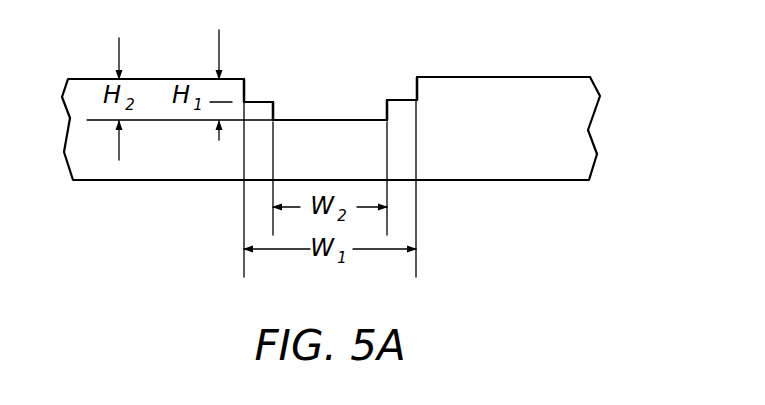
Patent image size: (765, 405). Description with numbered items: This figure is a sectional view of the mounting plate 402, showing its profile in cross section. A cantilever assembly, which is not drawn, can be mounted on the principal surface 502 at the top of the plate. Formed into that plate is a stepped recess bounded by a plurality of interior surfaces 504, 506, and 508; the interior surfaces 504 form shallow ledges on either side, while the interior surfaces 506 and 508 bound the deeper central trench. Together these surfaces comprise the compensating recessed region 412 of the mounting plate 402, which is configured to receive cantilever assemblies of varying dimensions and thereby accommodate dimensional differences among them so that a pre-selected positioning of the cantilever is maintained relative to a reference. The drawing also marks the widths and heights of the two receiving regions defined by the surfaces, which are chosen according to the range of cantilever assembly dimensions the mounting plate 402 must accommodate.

The mounting plate 402 is at (549, 145).
The principal surface 502 is at (541, 51).
The interior surface 504 is at (323, 53).
The interior surface 506 is at (324, 78).
The interior surface 508 is at (276, 110).
The compensating recessed region 412 is at (380, 63).